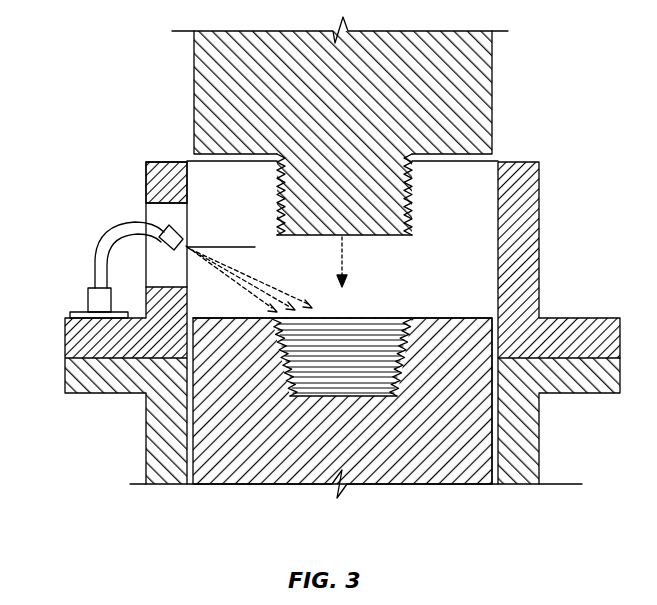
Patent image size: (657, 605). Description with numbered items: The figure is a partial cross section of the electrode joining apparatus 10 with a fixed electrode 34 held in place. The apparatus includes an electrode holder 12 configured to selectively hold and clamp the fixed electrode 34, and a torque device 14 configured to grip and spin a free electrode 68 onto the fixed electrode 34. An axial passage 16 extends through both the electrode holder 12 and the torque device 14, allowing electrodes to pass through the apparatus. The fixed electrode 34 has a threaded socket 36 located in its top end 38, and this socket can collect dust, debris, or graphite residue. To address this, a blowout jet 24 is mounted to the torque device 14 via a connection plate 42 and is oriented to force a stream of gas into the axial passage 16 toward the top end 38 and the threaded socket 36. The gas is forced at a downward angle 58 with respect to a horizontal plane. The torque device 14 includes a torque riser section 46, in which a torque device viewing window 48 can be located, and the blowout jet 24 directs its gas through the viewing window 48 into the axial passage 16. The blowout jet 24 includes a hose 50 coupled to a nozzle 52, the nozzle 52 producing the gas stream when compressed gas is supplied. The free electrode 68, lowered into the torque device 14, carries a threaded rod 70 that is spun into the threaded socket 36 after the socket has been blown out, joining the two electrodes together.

The electrode joining apparatus 10 is at (592, 112).
The electrode holder 12 is at (152, 430).
The torque device 14 is at (152, 168).
The axial passage 16 is at (345, 262).
The blowout jet 24 is at (97, 272).
The fixed electrode 34 is at (221, 476).
The threaded socket 36 is at (356, 336).
The top end 38 is at (474, 333).
The connection plate 42 is at (70, 313).
The torque riser section 46 is at (158, 185).
The torque device viewing window 48 is at (157, 210).
The hose 50 is at (102, 240).
The nozzle 52 is at (176, 223).
The downward angle 58 is at (245, 248).
The free electrode 68 is at (485, 97).
The threaded rod 70 is at (414, 207).